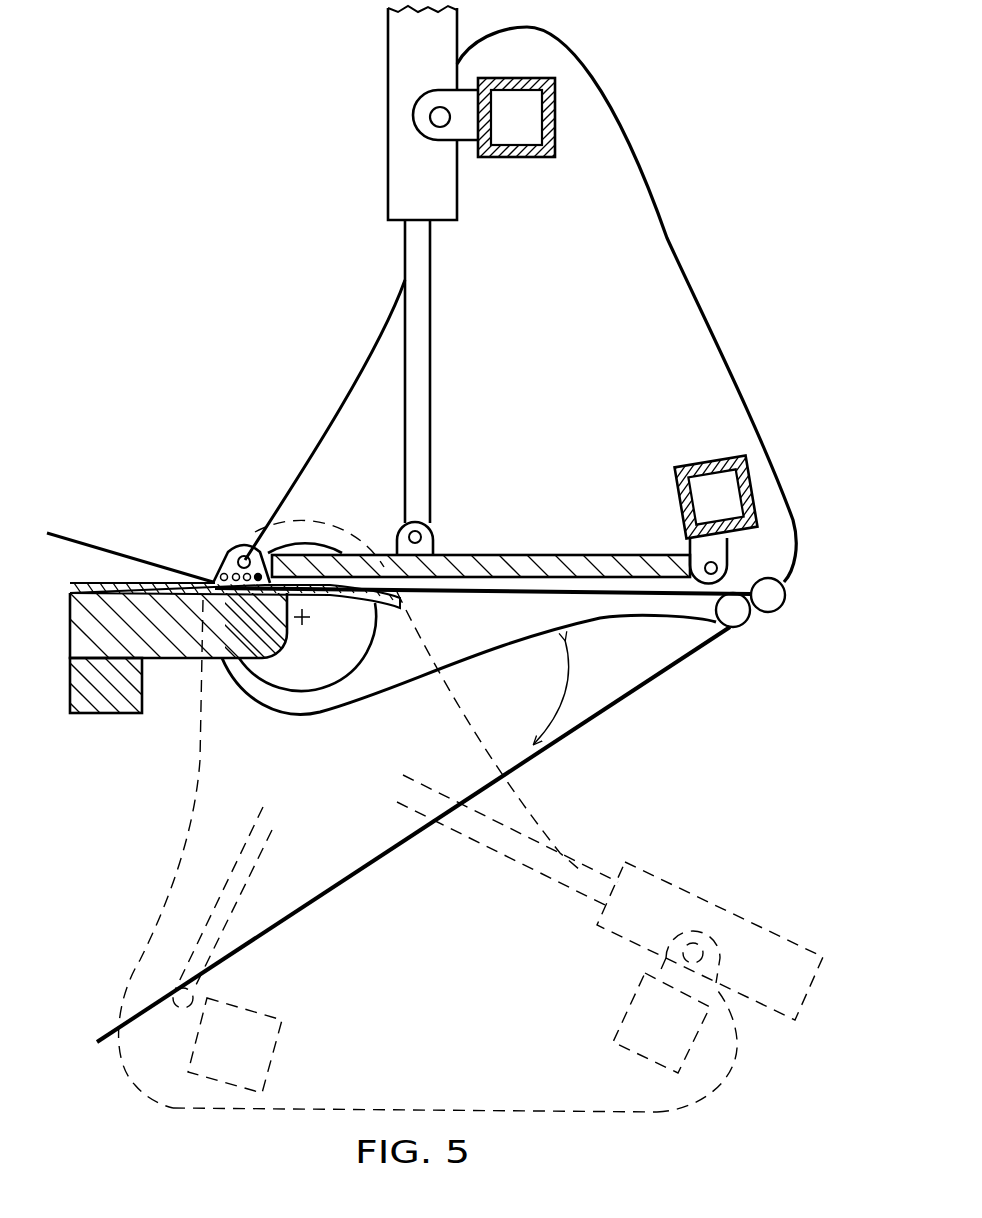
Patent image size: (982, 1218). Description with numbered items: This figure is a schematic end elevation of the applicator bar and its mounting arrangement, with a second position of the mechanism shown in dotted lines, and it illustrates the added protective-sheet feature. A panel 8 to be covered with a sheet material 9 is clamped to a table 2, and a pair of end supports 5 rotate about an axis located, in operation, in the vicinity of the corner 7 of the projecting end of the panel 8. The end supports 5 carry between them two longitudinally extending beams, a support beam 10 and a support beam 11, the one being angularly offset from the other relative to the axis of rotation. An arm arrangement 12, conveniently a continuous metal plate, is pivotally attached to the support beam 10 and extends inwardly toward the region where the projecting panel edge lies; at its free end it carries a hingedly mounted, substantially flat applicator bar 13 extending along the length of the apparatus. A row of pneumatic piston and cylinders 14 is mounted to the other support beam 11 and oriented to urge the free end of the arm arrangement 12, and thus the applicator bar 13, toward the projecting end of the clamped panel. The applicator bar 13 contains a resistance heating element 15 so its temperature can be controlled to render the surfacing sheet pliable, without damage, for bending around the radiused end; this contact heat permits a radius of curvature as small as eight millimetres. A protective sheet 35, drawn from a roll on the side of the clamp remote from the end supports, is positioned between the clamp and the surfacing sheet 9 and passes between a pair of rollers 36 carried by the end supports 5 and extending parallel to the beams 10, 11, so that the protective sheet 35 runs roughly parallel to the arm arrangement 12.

The table 2 is at (122, 698).
The end supports 5 is at (702, 305).
The corner 7 is at (305, 617).
The panel 8 is at (97, 635).
The sheet material 9 is at (138, 583).
The support beam 10 is at (757, 528).
The support beam 11 is at (555, 117).
The arm arrangement 12 is at (523, 558).
The applicator bar 13 is at (225, 565).
The pneumatic piston and cylinders 14 is at (413, 90).
The resistance heating element 15 is at (257, 572).
The protective sheet material 35 is at (90, 545).
The rollers 36 is at (785, 592).